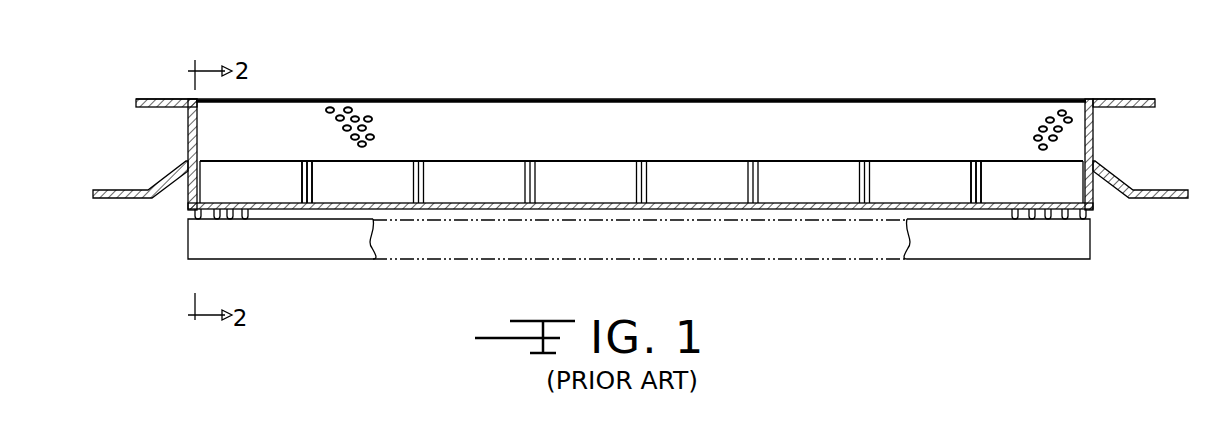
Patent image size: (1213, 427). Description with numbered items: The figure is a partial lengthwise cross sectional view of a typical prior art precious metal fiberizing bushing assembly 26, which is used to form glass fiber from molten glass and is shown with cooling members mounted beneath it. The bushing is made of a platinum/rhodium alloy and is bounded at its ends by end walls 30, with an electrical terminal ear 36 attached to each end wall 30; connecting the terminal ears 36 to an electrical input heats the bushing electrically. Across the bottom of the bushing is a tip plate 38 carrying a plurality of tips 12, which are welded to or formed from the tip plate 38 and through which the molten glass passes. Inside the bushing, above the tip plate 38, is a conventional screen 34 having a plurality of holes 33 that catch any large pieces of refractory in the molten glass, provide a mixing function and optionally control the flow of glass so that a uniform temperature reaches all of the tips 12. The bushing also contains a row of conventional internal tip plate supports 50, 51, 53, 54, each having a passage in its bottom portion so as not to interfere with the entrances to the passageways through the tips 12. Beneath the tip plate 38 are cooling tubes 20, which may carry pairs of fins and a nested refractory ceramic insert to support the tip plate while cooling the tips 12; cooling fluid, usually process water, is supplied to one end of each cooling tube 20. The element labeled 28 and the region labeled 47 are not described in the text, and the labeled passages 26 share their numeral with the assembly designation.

The tips 12 is at (203, 222).
The cooling tubes 20 is at (975, 243).
The precious metal fiberizing bushing assembly 26 is at (172, 126).
The top wall 28 is at (155, 99).
The end walls 30 is at (188, 139).
The holes 33 is at (338, 118).
The screen 34 is at (362, 118).
The electrical terminal ear 36 is at (133, 200).
The tip plate 38 is at (473, 201).
The compartment 47 is at (760, 183).
The internal tip plate support 50 is at (970, 178).
The internal tip plate support 51 is at (302, 187).
The internal tip plate support 53 is at (984, 178).
The internal tip plate support 54 is at (313, 187).